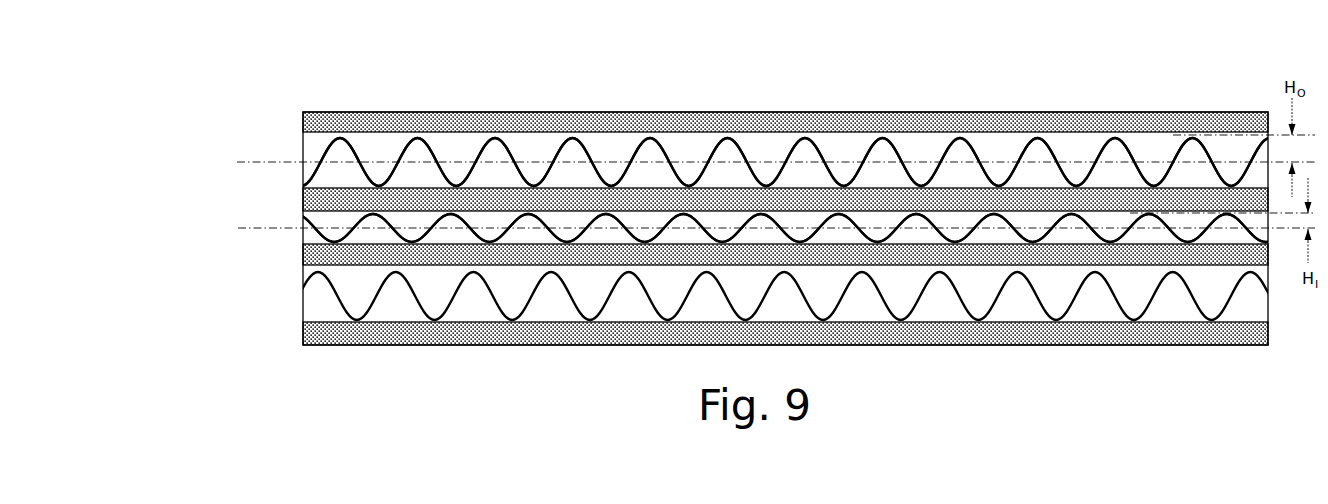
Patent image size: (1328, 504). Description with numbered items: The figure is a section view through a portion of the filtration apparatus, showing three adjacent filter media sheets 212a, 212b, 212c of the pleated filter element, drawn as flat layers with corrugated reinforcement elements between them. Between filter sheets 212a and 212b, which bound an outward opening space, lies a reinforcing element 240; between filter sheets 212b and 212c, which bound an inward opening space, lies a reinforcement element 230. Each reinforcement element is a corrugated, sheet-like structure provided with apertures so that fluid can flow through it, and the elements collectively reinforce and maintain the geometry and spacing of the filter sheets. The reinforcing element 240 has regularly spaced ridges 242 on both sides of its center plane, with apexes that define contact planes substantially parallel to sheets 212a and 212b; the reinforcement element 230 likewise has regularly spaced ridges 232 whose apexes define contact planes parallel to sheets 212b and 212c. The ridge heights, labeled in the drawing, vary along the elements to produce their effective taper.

The filtration element sheet 212a is at (300, 123).
The filtration element sheet 212b is at (302, 203).
The filtration element sheet 212c is at (302, 250).
The reinforcing element 240 is at (316, 155).
The reinforcement element 230 is at (302, 220).
The ridges 232 is at (645, 135).
The ridges 242 is at (913, 213).